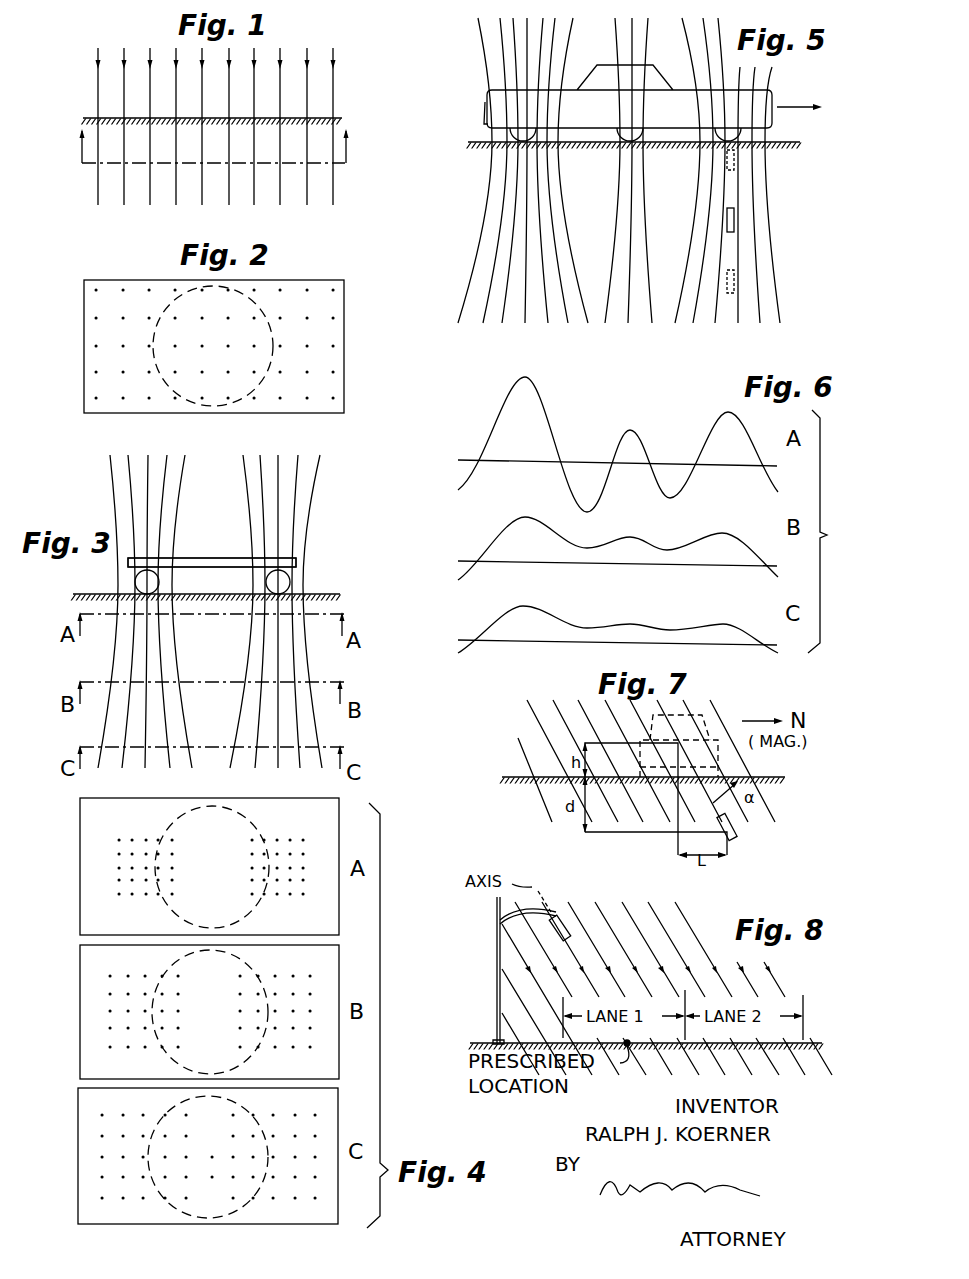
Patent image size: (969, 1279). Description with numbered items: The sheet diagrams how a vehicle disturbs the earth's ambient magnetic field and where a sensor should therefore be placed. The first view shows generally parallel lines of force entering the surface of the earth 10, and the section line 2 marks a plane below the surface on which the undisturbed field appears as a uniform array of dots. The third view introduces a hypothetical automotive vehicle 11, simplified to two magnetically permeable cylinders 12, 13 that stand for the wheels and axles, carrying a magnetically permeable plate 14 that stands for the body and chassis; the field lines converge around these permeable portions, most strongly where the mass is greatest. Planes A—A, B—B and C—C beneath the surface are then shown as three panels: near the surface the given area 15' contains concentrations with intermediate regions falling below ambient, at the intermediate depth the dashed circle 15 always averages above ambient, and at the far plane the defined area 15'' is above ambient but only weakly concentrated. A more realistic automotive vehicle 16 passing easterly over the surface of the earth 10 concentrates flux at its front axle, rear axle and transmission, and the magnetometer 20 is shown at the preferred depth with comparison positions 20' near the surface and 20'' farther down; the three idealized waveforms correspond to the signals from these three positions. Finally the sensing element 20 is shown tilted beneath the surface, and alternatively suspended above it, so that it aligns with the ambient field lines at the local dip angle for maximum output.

In FIG. 1, the section line 2— 2 is at (212, 146).
In FIG. 1, the surface of the earth 10 is at (340, 118).
In FIG. 3, the surface of the earth 10 is at (338, 594).
In FIG. 5, the surface of the earth 10 is at (783, 142).
In FIG. 3, the hypothetical automotive vehicle 11 is at (190, 557).
In FIG. 3, the magnetically permeable cylinder 12 is at (134, 583).
In FIG. 3, the magnetically permeable cylinder 13 is at (290, 592).
In FIG. 3, the magnetically permeable plate 14 is at (213, 558).
In FIG. 4, the dashed circle observation area 15 is at (209, 1012).
In FIG. 4, the given area 15' is at (209, 866).
In FIG. 4, the defined area 15'' is at (208, 1156).
In FIG. 5, the automotive vehicle 16 is at (770, 97).
In FIG. 5, the magnetometer 20 is at (770, 214).
In FIG. 7, the magnetometer 20 is at (748, 832).
In FIG. 8, the magnetometer 20 is at (540, 907).
In FIG. 5, the magnetometer in near position 20' is at (771, 166).
In FIG. 5, the magnetometer in far position 20'' is at (776, 276).